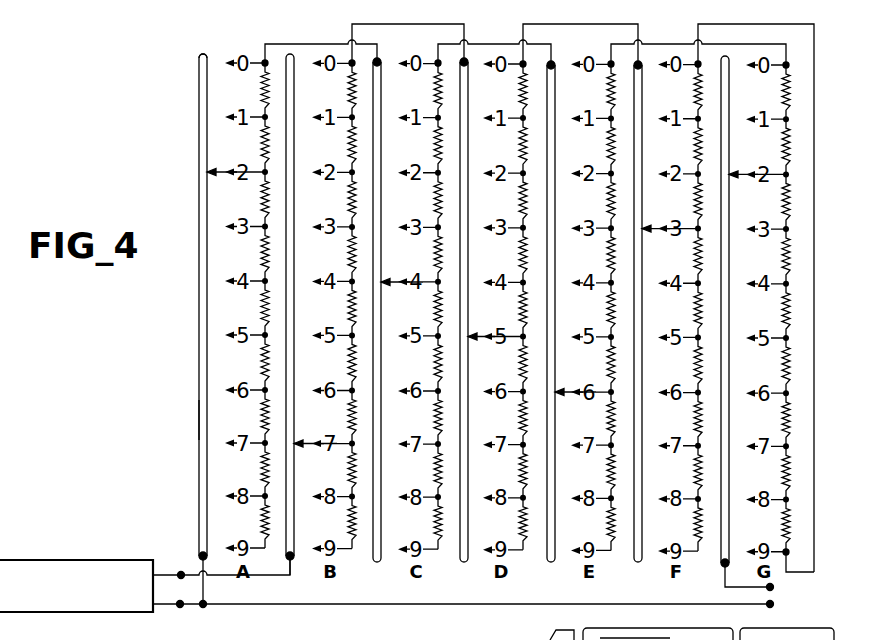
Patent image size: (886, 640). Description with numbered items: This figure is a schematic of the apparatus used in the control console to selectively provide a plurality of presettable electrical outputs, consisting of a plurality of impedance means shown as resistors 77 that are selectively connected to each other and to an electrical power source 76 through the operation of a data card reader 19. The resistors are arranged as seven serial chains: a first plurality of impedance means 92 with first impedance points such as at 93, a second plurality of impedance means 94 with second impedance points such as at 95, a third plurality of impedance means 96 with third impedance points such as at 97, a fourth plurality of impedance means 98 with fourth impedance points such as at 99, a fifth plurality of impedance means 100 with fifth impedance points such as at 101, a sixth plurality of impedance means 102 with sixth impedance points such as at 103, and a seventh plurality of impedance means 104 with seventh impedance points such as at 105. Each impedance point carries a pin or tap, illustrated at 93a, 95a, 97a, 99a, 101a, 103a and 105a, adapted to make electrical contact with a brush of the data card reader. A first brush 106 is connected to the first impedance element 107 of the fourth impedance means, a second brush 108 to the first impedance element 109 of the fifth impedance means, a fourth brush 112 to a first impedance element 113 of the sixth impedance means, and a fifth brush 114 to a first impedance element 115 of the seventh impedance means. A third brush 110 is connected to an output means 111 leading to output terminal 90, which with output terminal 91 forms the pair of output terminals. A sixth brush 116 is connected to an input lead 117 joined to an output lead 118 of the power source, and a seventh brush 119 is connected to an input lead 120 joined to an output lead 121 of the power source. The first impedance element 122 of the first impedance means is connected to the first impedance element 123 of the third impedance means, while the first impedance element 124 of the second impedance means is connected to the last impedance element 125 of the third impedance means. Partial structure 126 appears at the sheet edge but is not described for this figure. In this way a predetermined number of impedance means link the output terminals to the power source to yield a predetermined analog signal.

The resistors 77 is at (178, 52).
The data card reader 19 is at (196, 422).
The electrical power source 76 is at (52, 560).
The output lead 121 is at (162, 572).
The input lead 117 is at (208, 587).
The output lead 118 is at (160, 607).
The input lead 120 is at (292, 576).
The sixth brush 116 is at (198, 136).
The seventh brush 119 is at (294, 206).
The fourth brush 112 is at (380, 208).
The fifth brush 114 is at (466, 208).
The first brush 106 is at (550, 157).
The second brush 108 is at (638, 157).
The third brush 110 is at (730, 263).
The first impedance element 113 is at (262, 90).
The first impedance element 115 is at (348, 90).
The first impedance element 107 is at (435, 142).
The first impedance element 109 is at (521, 90).
The first impedance element 122 is at (608, 90).
The first impedance element 124 is at (695, 90).
The first impedance element 123 is at (783, 90).
The last impedance element 125 is at (782, 520).
The sixth plurality of impedance means 102 is at (262, 59).
The seventh plurality of impedance means 104 is at (349, 59).
The fourth plurality of impedance means 98 is at (435, 60).
The fifth plurality of impedance means 100 is at (521, 59).
The first plurality of impedance means 92 is at (609, 60).
The second plurality of impedance means 94 is at (695, 59).
The third plurality of impedance means 96 is at (789, 62).
The sixth impedance point 103 is at (258, 170).
The pin or tap 103a is at (229, 176).
The seventh impedance point 105 is at (348, 440).
The pin or tap 105a is at (317, 444).
The fourth impedance point 99 is at (435, 281).
The pin or tap 99a is at (396, 287).
The fifth impedance point 101 is at (520, 336).
The pin or tap 101a is at (483, 338).
The first impedance point 93 is at (608, 389).
The pin or tap 93a is at (566, 393).
The second impedance point 95 is at (695, 227).
The pin or tap 95a is at (652, 236).
The third impedance point 97 is at (785, 170).
The pin or tap 97a is at (752, 179).
The output means 111 is at (725, 576).
The output terminal 90 is at (770, 587).
The output terminal 91 is at (770, 604).
The housing 126 is at (666, 633).